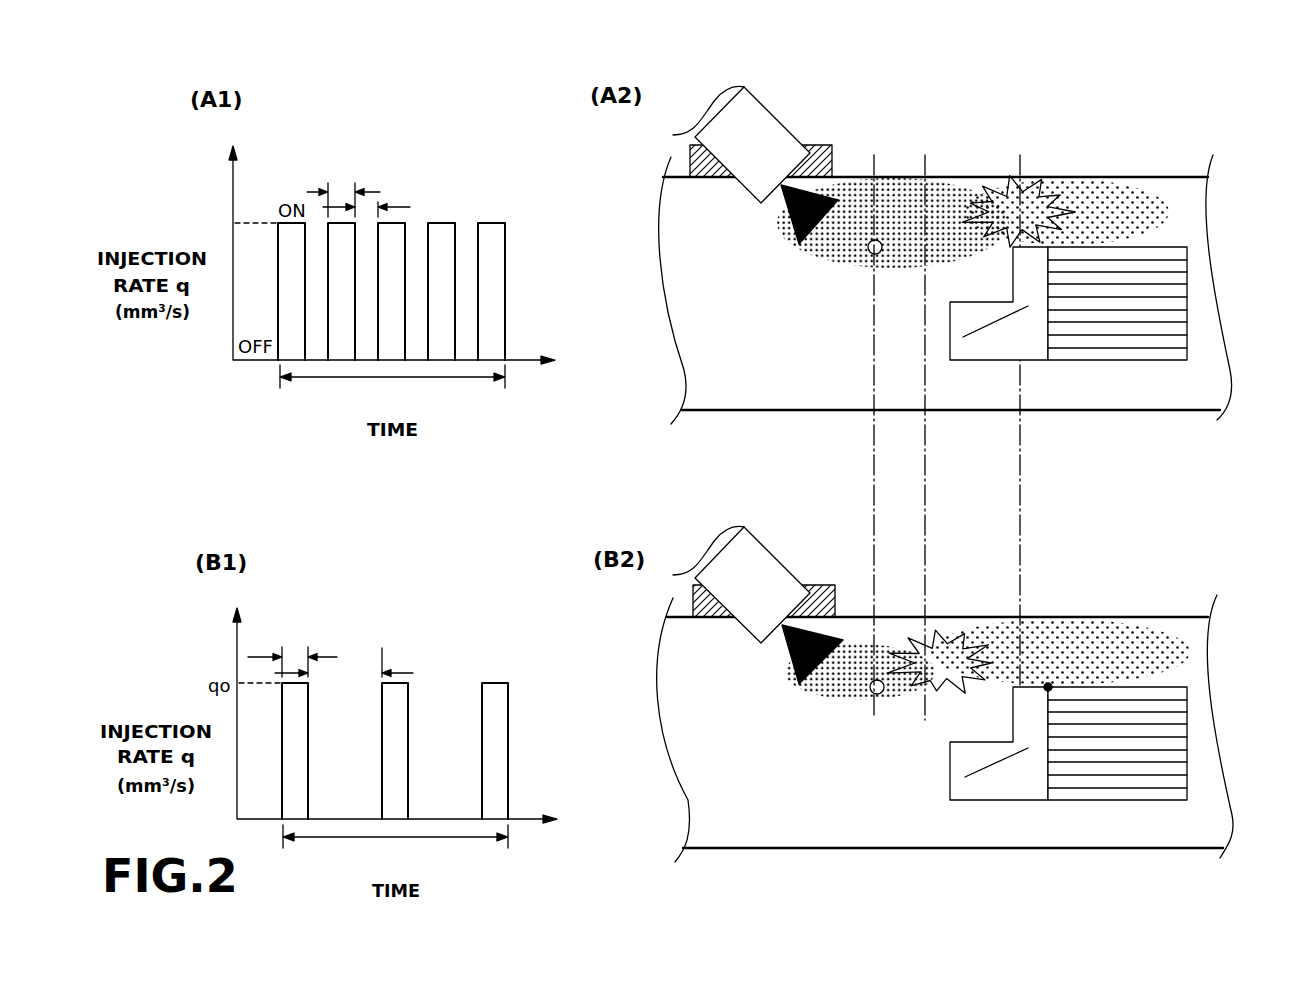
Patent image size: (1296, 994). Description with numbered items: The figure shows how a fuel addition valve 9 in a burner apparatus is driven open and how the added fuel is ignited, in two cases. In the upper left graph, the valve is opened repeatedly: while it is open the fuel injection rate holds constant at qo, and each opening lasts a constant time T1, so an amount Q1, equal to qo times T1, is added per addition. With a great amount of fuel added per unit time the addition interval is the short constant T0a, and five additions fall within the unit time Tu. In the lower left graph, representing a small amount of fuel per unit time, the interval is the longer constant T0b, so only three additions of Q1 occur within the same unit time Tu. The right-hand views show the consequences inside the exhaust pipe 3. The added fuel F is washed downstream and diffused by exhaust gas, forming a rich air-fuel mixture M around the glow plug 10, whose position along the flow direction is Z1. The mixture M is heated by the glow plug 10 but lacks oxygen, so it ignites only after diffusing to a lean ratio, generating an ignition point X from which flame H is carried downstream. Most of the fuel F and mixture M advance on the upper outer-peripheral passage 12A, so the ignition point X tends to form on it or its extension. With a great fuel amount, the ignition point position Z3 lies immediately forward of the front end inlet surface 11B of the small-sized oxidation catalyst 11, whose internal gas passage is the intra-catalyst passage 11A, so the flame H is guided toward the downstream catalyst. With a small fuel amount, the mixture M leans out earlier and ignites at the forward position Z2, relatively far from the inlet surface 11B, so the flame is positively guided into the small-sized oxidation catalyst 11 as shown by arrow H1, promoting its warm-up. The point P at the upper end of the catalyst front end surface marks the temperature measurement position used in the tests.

The exhaust pipe 3 is at (802, 412).
The fuel addition valve 9 is at (747, 130).
The glow plug 10 is at (867, 252).
The small-sized oxidation catalyst 11 is at (1120, 523).
The intra-catalyst passage 11A is at (1153, 343).
The front end inlet surface 11B is at (1047, 330).
The upper outer-peripheral passage 12A is at (1183, 198).
The air-fuel mixture M is at (900, 188).
The ignition point X is at (1060, 183).
The flame H is at (1130, 188).
The added fuel F is at (783, 188).
The temperature measurement position P is at (1049, 686).
The arrow indicating flame guided to small-sized oxidation catalyst H1 is at (1000, 707).
The glow plug position Z1 is at (874, 424).
The ignition point position for small fuel amount Z2 is at (924, 425).
The ignition point position for great fuel amount Z3 is at (1019, 435).
The amount of fuel added per addition Q1 is at (498, 258).
The valve open time T1 is at (322, 422).
The addition interval for great fuel amount T0a is at (378, 201).
The addition interval for small fuel amount T0b is at (353, 662).
The unit time Tu is at (394, 617).
The constant fuel injection rate qo is at (241, 223).